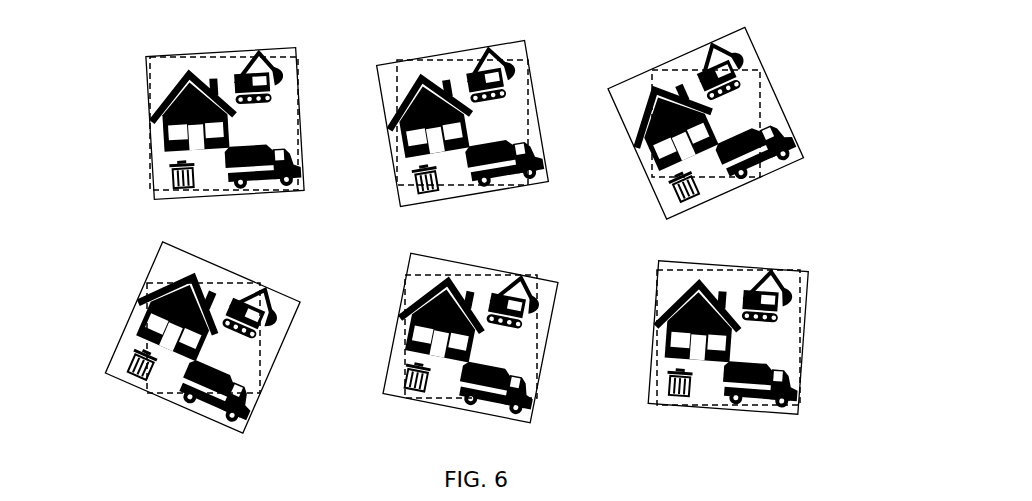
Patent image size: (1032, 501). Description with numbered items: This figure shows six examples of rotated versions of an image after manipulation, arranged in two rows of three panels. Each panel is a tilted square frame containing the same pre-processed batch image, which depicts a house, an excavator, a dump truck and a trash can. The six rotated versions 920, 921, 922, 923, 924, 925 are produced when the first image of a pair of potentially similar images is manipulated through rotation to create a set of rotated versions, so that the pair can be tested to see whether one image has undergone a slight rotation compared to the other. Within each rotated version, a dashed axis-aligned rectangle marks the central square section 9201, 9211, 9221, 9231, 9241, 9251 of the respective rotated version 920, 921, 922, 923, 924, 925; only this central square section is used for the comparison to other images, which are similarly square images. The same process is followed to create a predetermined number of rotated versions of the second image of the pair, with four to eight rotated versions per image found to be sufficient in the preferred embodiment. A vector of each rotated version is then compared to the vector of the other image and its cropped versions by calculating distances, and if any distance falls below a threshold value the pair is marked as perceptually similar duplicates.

The rotated version 920 is at (145, 83).
The central square section 9201 is at (235, 55).
The rotated version 921 is at (446, 123).
The central square section 9211 is at (463, 60).
The rotated version 922 is at (658, 202).
The central square section 9221 is at (682, 68).
The rotated version 923 is at (137, 307).
The central square section 9231 is at (232, 282).
The rotated version 924 is at (398, 320).
The central square section 9241 is at (473, 273).
The rotated version 925 is at (652, 330).
The central square section 9251 is at (733, 268).